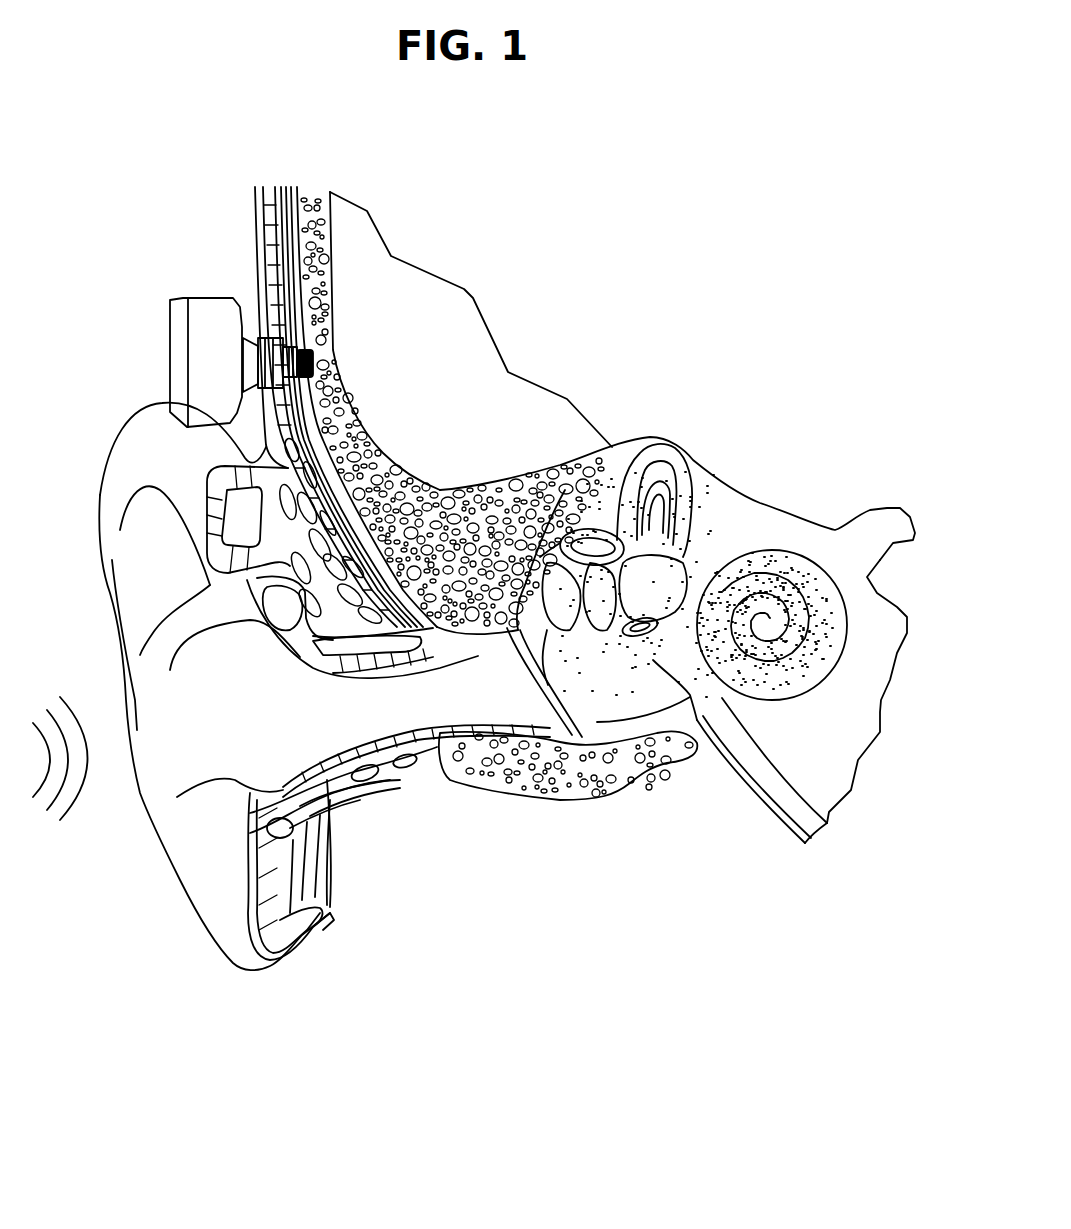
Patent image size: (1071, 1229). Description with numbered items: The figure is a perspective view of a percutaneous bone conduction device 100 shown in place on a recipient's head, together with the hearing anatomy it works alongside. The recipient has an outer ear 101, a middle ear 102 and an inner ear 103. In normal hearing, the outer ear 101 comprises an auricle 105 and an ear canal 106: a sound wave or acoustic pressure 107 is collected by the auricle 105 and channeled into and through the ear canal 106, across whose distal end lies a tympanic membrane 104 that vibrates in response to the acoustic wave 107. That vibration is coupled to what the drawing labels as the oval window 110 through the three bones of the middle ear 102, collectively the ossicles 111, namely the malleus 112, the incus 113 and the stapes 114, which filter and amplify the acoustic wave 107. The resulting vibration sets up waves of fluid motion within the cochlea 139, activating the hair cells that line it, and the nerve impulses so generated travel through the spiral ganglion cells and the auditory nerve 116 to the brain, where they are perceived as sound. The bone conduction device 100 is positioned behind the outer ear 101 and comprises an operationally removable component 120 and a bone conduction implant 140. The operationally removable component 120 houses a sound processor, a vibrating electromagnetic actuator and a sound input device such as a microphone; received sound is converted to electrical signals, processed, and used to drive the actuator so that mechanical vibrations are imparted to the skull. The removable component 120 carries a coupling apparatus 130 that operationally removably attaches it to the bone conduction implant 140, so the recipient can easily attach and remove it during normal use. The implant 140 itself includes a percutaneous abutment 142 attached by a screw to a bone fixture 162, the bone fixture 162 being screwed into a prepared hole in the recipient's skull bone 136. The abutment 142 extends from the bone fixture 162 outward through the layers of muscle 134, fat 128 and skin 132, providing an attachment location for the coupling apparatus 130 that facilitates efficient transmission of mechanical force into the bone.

The percutaneous bone conduction device 100 is at (140, 318).
The outer ear 101 is at (235, 992).
The middle ear 102 is at (592, 850).
The inner ear 103 is at (823, 892).
The tympanic membrane 104 is at (550, 693).
The auricle 105 is at (186, 915).
The ear canal 106 is at (382, 713).
The sound wave or acoustic pressure 107 is at (77, 713).
The cochlea 110 is at (660, 612).
The ossicles 111 is at (603, 672).
The malleus 112 is at (558, 592).
The incus 113 is at (617, 618).
The stapes 114 is at (660, 614).
The auditory nerve 116 is at (886, 522).
The operationally removable component 120 is at (217, 292).
The fat 128 is at (273, 190).
The coupling apparatus 130 is at (250, 362).
The skin 132 is at (253, 201).
The muscle 134 is at (281, 192).
The skull bone 136 is at (318, 192).
The cochlea 139 is at (881, 708).
The bone conduction implant 140 is at (307, 332).
The percutaneous abutment 142 is at (272, 368).
The bone fixture 162 is at (315, 363).